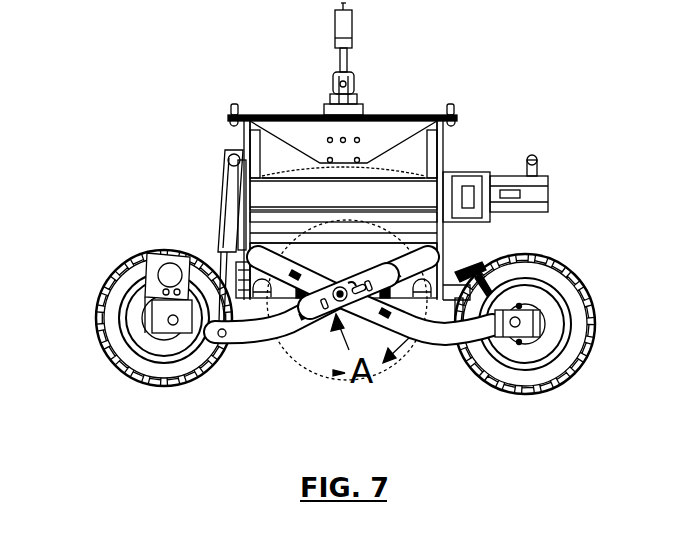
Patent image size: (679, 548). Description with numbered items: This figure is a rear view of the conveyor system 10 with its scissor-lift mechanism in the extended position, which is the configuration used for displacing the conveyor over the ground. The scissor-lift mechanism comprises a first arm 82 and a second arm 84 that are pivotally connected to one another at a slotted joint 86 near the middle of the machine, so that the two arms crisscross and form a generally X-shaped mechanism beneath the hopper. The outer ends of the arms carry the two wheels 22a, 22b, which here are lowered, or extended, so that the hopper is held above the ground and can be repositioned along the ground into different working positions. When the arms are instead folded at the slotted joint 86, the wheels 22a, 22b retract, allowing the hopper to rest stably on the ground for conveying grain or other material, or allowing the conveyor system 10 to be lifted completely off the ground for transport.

The conveyor system 10 is at (176, 104).
The offset wheel 22a is at (97, 337).
The offset wheel 22b is at (578, 281).
The first arm 82 is at (256, 345).
The second arm 84 is at (441, 330).
The slotted joint 86 is at (337, 322).